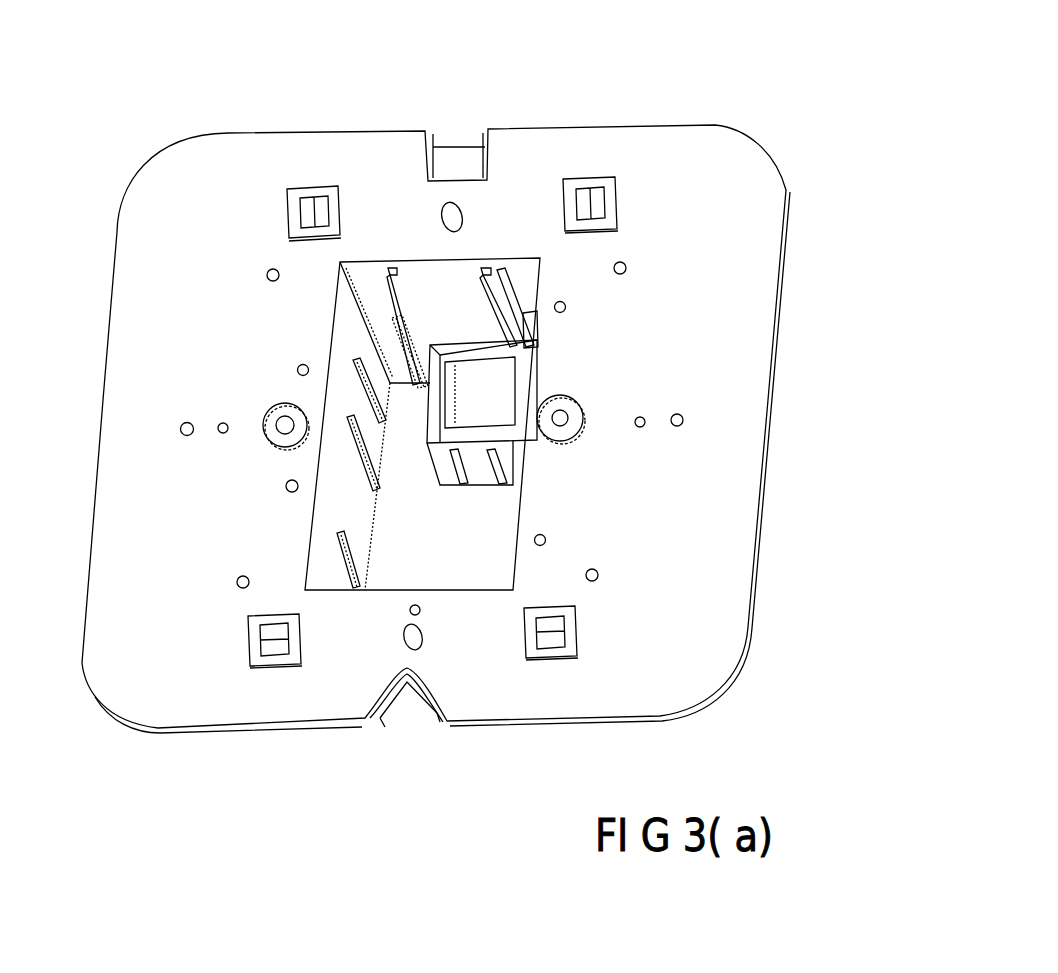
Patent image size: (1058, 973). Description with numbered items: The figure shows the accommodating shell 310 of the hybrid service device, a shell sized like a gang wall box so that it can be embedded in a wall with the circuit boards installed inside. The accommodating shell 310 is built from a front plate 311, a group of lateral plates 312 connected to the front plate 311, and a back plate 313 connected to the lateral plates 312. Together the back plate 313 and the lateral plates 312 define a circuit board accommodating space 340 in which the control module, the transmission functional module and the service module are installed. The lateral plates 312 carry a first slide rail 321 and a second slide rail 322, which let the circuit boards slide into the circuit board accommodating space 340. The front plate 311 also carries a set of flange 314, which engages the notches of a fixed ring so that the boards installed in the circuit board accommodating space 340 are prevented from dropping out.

The accommodating shell 310 is at (756, 104).
The front plate 311 is at (698, 243).
The lateral plates 312 is at (342, 398).
The back plate 313 is at (433, 553).
The flange 314 is at (583, 412).
The first slide rail 321 is at (493, 263).
The second slide rail 322 is at (395, 263).
The circuit board accommodating space 340 is at (477, 567).